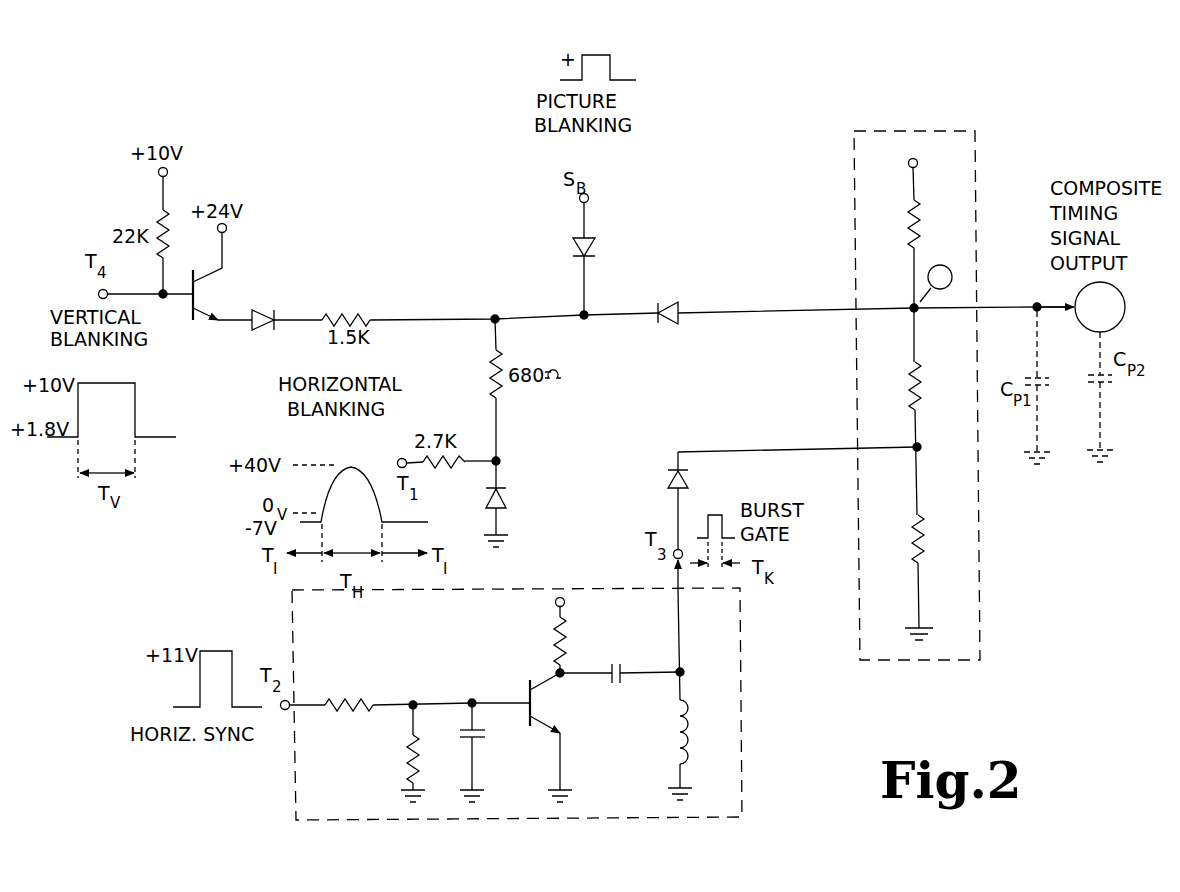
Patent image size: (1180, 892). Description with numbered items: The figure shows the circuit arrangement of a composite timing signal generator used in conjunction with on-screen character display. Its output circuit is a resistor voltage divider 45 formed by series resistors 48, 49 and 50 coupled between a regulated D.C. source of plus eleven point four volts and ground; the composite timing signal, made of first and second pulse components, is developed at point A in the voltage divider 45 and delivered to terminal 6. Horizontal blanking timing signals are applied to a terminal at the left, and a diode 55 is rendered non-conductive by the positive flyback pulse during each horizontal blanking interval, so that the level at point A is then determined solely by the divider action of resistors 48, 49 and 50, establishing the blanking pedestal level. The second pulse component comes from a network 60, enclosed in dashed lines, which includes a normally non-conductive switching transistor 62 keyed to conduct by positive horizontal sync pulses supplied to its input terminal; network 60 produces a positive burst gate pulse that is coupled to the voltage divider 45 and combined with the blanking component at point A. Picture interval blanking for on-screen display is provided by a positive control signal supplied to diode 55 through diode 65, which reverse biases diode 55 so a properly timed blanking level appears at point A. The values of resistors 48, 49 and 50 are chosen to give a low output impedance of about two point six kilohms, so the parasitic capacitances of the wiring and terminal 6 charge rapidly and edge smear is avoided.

The terminal 6 is at (1083, 307).
The resistor voltage divider 45 is at (906, 126).
The resistor 48 is at (908, 211).
The resistor 49 is at (909, 388).
The resistor 50 is at (910, 537).
The diode 55 is at (678, 302).
The network 60 is at (741, 658).
The switching transistor 62 is at (570, 716).
The diode 65 is at (589, 249).